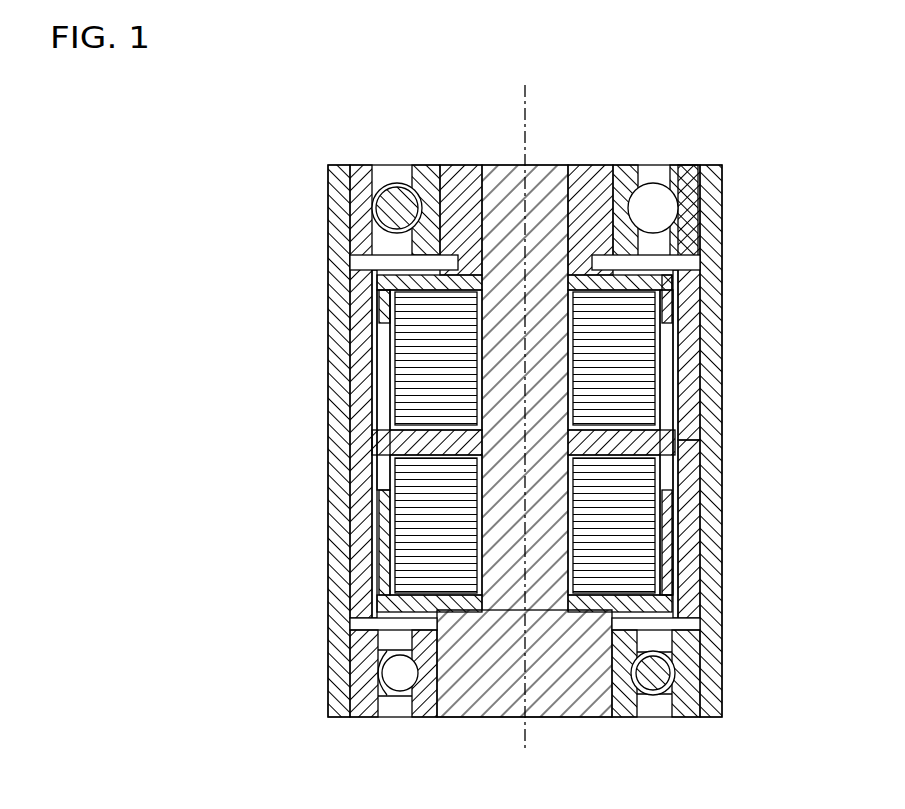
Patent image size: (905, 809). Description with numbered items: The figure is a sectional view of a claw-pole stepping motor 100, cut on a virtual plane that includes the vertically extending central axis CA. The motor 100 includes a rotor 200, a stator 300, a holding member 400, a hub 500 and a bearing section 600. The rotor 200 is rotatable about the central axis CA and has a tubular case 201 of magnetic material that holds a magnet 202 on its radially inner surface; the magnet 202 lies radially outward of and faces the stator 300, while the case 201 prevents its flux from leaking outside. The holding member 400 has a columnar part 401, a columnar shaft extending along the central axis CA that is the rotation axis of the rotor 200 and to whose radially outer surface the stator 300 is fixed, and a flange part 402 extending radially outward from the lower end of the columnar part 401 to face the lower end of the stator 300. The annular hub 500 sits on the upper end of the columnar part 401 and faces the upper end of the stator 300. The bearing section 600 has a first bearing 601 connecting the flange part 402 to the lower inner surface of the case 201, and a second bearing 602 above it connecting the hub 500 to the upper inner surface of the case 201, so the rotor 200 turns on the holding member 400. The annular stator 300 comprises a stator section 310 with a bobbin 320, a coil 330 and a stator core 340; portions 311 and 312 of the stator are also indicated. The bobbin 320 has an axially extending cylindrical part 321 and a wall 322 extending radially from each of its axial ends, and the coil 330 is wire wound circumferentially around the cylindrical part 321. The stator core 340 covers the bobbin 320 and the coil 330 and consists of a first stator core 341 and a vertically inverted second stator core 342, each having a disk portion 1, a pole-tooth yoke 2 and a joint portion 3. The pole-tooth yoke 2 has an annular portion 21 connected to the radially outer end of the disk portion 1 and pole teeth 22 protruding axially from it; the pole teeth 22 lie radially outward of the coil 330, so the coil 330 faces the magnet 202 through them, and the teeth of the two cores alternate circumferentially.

The motor 100 is at (316, 153).
The rotor 200 is at (463, 441).
The case 201 is at (335, 511).
The magnet 202 is at (357, 553).
The stator 300 is at (451, 391).
The stator section 310 is at (451, 391).
The first frame portion 311 is at (677, 527).
The second frame portion 312 is at (677, 357).
The bobbin 320 is at (427, 443).
The cylindrical part 321 is at (423, 380).
The wall 322 is at (473, 350).
The coil 330 is at (440, 297).
The stator core 340 is at (430, 405).
The disk portion 1 is at (432, 270).
The pole-tooth yoke 2 is at (456, 430).
The annular portion 21 is at (383, 300).
The pole teeth 22 is at (383, 323).
The joint portion 3 is at (390, 292).
The first stator core 341 is at (672, 440).
The second stator core 342 is at (670, 285).
The holding member 400 is at (640, 441).
The columnar part 401 is at (555, 510).
The flange part 402 is at (614, 590).
The hub 500 is at (460, 165).
The bearing section 600 is at (566, 413).
The first bearing 601 is at (685, 675).
The second bearing 602 is at (692, 208).
The central axis CA is at (526, 123).